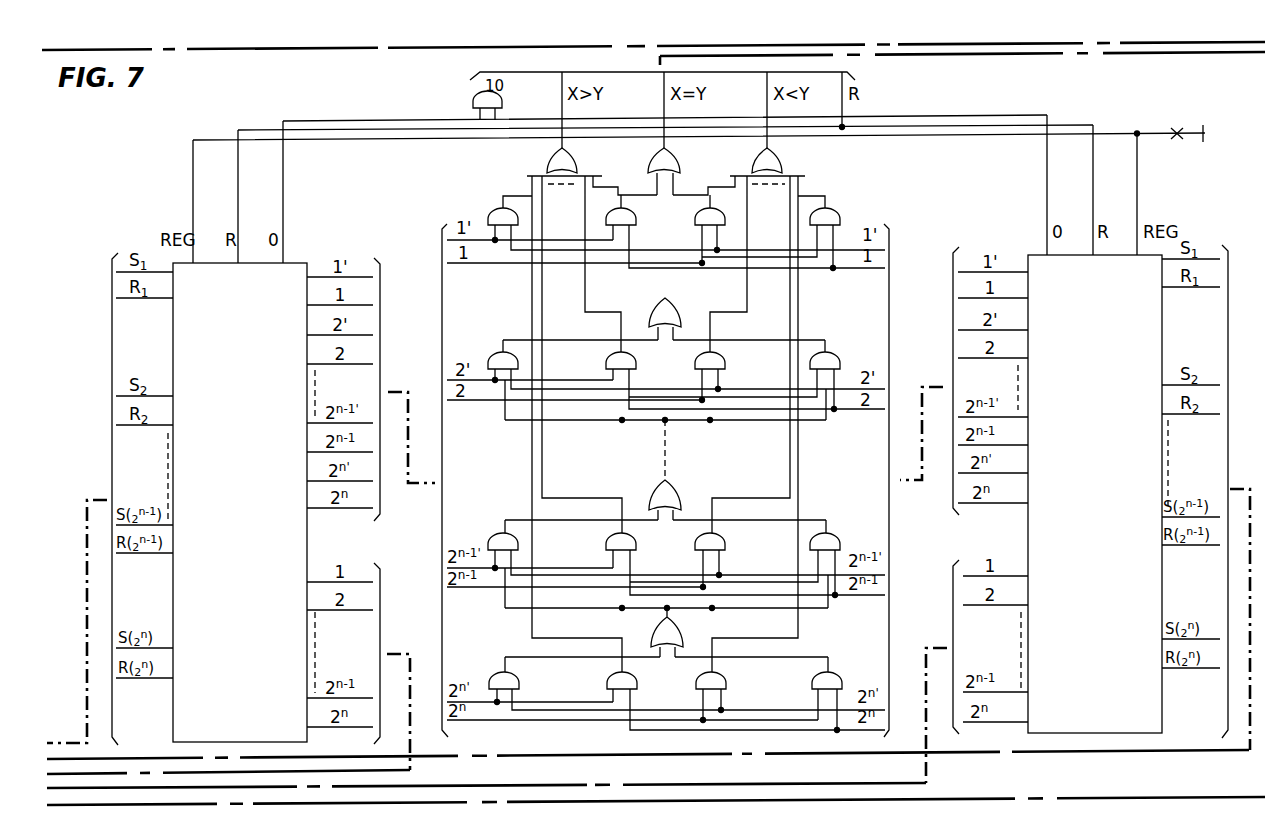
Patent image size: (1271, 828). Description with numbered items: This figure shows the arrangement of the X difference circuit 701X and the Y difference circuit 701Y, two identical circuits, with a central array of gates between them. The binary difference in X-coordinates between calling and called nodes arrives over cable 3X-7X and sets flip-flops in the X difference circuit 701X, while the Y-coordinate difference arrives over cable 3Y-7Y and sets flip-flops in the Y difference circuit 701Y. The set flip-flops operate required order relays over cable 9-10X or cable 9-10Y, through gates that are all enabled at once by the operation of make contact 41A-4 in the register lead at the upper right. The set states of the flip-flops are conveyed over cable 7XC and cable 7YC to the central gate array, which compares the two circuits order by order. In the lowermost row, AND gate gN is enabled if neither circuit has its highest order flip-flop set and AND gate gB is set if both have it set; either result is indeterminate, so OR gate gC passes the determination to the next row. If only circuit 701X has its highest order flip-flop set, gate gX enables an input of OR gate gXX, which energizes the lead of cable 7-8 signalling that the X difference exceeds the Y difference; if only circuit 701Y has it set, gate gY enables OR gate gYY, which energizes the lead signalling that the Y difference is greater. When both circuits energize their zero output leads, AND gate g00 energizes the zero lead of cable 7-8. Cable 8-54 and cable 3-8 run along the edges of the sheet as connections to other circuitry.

The X difference circuit 701X is at (300, 258).
The Y difference circuit 701Y is at (1030, 253).
The make contact 41A-4 is at (1186, 120).
The AND gate g00 is at (473, 99).
The OR gate gXX is at (548, 163).
The OR gate gYY is at (783, 163).
The OR gate gC is at (681, 633).
The AND gate gB is at (498, 670).
The AND gate gX is at (612, 678).
The AND gate gY is at (700, 678).
The AND gate gN is at (817, 677).
The cable 8-54 is at (333, 52).
The cable 7-8 is at (955, 54).
The cable 7XC is at (405, 390).
The cable 7YC is at (930, 387).
The cable 9-10X is at (88, 500).
The cable 9-10Y is at (307, 757).
The cable 3X-7X is at (410, 768).
The cable 3Y-7Y is at (926, 768).
The cable 3-8 is at (1105, 797).